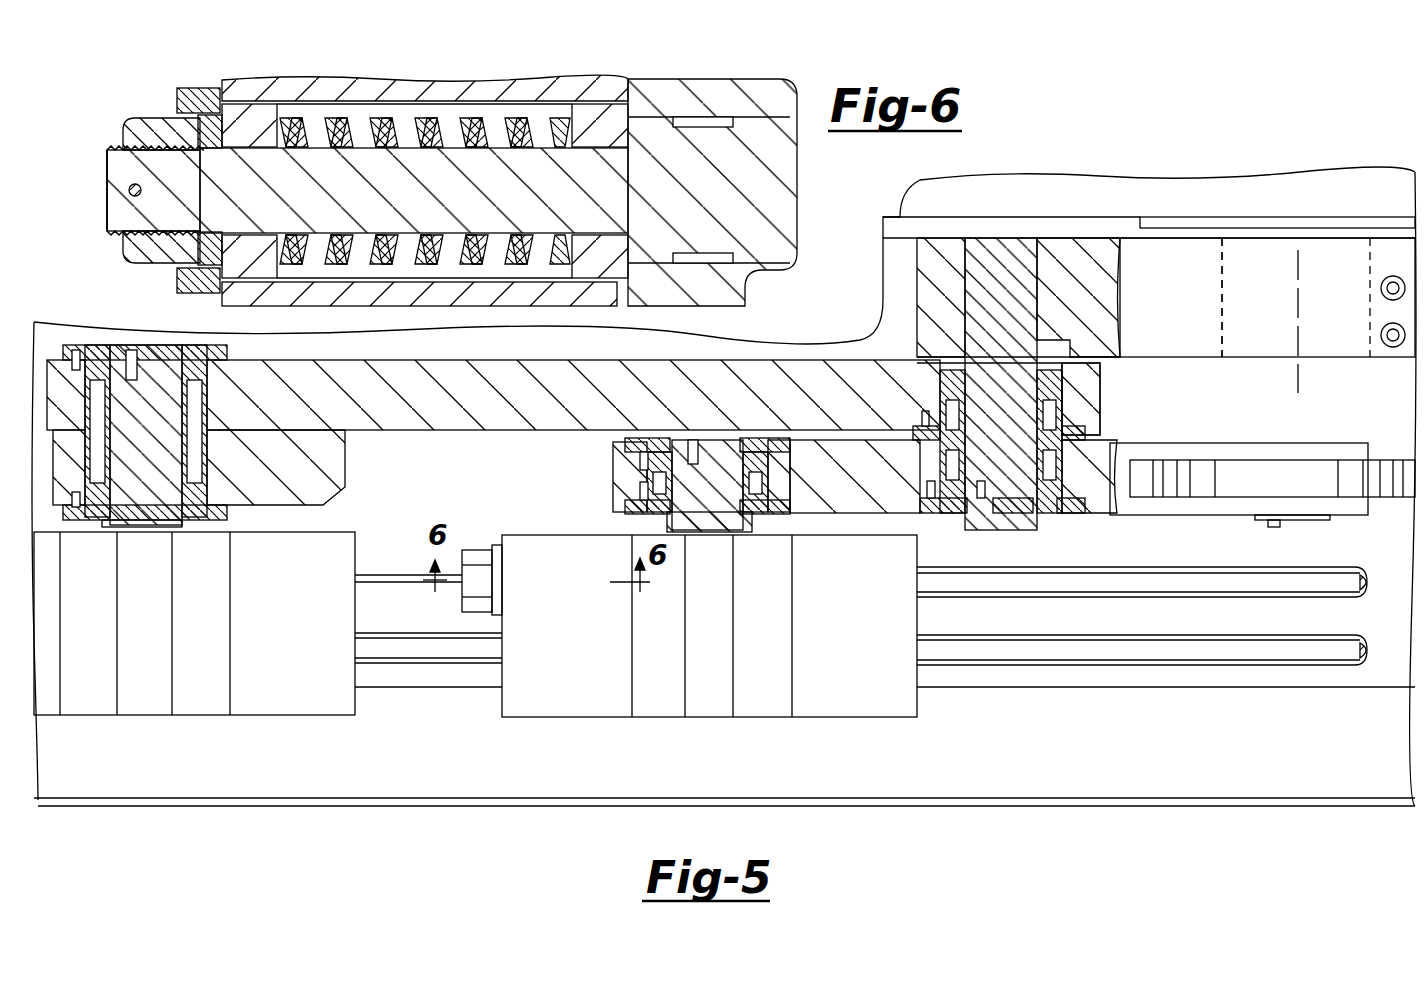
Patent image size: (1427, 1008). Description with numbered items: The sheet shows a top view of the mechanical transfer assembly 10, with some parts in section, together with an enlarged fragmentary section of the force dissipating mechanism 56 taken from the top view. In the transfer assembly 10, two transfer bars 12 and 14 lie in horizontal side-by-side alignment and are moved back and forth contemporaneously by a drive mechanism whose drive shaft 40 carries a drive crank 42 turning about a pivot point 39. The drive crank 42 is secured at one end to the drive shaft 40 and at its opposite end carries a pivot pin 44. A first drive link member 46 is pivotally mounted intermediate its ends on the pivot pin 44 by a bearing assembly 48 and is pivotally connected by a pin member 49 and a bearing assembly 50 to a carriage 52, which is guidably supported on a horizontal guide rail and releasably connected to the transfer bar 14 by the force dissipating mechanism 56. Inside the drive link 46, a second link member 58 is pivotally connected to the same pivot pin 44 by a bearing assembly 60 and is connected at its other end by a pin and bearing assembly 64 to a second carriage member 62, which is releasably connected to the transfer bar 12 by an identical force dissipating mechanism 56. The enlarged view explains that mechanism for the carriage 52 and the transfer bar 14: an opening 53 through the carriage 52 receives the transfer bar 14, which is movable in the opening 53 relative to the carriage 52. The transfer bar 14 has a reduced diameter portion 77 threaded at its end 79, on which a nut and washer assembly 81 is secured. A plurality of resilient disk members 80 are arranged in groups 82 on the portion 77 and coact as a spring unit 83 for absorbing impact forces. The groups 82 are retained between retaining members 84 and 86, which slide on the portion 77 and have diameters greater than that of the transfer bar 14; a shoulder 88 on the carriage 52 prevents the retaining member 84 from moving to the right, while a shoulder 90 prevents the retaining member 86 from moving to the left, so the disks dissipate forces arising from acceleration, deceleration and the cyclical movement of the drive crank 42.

In FIG. 5, the mechanical transfer assembly 10 is at (1205, 463).
In FIG. 5, the transfer bar 12 is at (1048, 655).
In FIG. 6, the transfer bar 14 is at (770, 282).
In FIG. 5, the transfer bar 14 is at (1101, 585).
In FIG. 5, the pivot point 39 is at (1298, 393).
In FIG. 5, the drive shaft 40 is at (1224, 270).
In FIG. 5, the drive crank 42 is at (1172, 357).
In FIG. 5, the pivot pin 44 is at (1000, 515).
In FIG. 5, the first drive link member 46 is at (1118, 512).
In FIG. 5, the bearing assembly 48 is at (922, 490).
In FIG. 5, the pin member 49 is at (740, 520).
In FIG. 5, the bearing assembly 50 is at (655, 480).
In FIG. 5, the carriage 52 is at (530, 717).
In FIG. 6, the opening 53 is at (438, 100).
In FIG. 6, the force dissipating mechanism 56 is at (158, 270).
In FIG. 5, the force dissipating mechanism 56 is at (488, 608).
In FIG. 5, the second link member 58 is at (457, 432).
In FIG. 5, the bearing assembly 60 is at (1064, 388).
In FIG. 5, the second carriage member 62 is at (285, 715).
In FIG. 5, the pin and bearing assembly 64 is at (215, 510).
In FIG. 6, the reduced diameter portion 77 is at (497, 150).
In FIG. 6, the threaded end 79 is at (108, 232).
In FIG. 6, the resilient disk member 80 is at (290, 105).
In FIG. 6, the nut and washer assembly 81 is at (138, 108).
In FIG. 6, the groups of resilient disk members 82 is at (316, 272).
In FIG. 6, the spring unit 83 is at (462, 272).
In FIG. 6, the retaining member 84 is at (592, 112).
In FIG. 6, the retaining member 86 is at (232, 110).
In FIG. 6, the shoulder 88 is at (617, 306).
In FIG. 6, the shoulder 90 is at (232, 268).